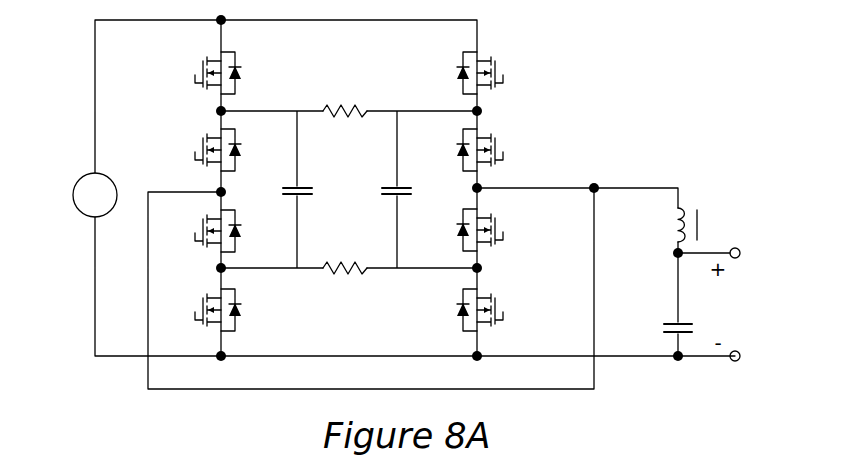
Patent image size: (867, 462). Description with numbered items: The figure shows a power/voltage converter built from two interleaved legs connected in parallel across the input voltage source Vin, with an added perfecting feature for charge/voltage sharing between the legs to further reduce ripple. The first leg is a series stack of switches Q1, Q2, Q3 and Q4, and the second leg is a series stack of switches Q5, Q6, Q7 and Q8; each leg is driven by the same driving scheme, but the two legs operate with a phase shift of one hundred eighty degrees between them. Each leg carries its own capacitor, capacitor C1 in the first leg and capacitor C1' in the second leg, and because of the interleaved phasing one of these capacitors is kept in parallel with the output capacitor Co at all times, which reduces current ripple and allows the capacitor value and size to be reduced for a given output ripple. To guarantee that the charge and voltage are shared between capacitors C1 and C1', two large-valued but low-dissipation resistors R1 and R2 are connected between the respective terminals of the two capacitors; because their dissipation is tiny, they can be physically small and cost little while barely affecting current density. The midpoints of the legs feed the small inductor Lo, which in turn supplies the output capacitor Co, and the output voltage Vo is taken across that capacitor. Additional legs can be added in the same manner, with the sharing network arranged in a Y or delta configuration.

The switch Q1 is at (202, 71).
The switch Q2 is at (200, 149).
The switch Q3 is at (202, 229).
The switch Q4 is at (202, 308).
The switch Q5 is at (500, 71).
The switch Q6 is at (500, 149).
The switch Q7 is at (494, 228).
The switch Q8 is at (494, 308).
The resistor R1 is at (345, 90).
The resistor R2 is at (345, 289).
The capacitor C1 is at (286, 173).
The capacitor C1' is at (414, 172).
The input voltage source Vin is at (103, 213).
The small inductor Lo is at (672, 226).
The output capacitor Co is at (659, 313).
The output voltage Vo is at (734, 311).